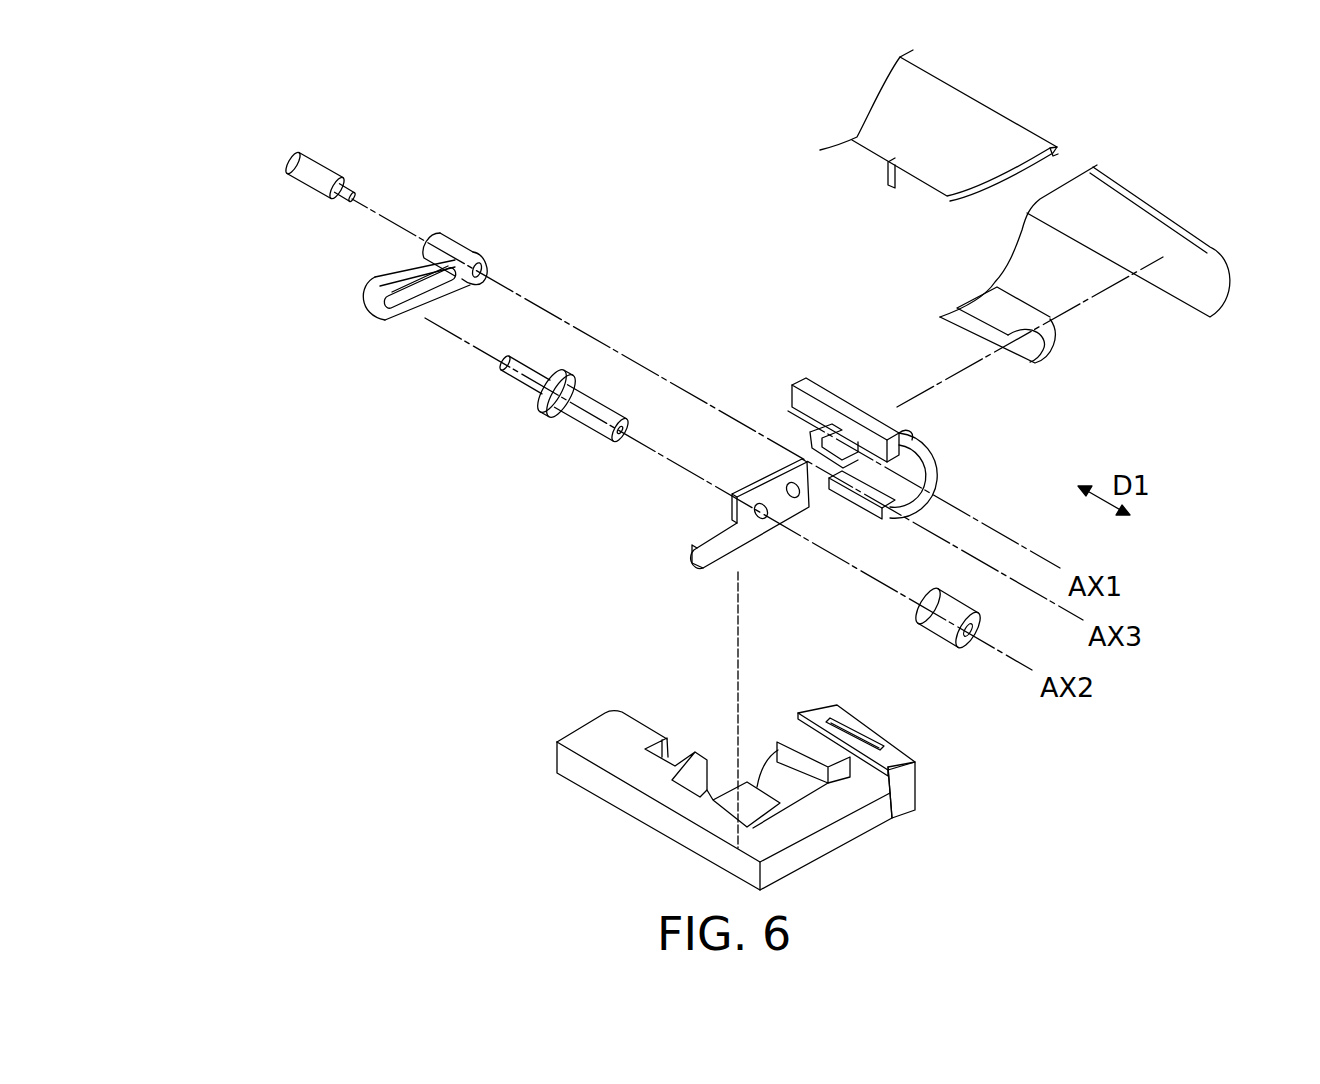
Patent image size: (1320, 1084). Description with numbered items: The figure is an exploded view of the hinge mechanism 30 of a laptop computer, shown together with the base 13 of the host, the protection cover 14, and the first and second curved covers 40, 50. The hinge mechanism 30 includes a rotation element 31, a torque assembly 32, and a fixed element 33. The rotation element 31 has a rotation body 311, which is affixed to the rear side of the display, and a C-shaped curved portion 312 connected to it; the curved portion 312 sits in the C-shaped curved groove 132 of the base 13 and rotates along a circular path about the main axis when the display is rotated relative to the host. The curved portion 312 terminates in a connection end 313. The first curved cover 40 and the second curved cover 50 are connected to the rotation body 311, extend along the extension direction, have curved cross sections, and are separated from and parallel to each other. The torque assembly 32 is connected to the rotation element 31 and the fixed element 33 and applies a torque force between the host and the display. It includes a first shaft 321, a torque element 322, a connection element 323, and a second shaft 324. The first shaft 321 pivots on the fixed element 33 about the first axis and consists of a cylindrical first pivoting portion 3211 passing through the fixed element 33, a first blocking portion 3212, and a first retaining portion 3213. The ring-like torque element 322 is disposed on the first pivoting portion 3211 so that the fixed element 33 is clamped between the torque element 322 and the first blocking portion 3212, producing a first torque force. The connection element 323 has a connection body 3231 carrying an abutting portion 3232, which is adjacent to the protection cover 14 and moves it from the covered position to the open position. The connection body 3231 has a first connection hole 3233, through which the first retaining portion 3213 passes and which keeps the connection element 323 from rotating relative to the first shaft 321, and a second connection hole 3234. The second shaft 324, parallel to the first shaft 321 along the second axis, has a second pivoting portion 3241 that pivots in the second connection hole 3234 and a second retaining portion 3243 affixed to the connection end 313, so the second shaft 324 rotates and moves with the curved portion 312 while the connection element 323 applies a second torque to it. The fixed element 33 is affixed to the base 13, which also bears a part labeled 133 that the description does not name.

The base 13 is at (777, 755).
The curved groove 132 is at (882, 746).
The top plate of base 133 is at (820, 712).
The protection cover 14 is at (993, 132).
The hinge mechanism 30 is at (193, 468).
The rotation element 31 is at (917, 448).
The rotation body 311 is at (828, 382).
The curved portion 312 is at (925, 423).
The connection end 313 is at (865, 515).
The torque assembly 32 is at (265, 128).
The first shaft 321 is at (489, 431).
The first pivoting portion 3211 is at (585, 432).
The first blocking portion 3212 is at (560, 405).
The first retaining portion 3213 is at (530, 383).
The torque element 322 is at (920, 655).
The connection element 323 is at (396, 274).
The connection body 3231 is at (383, 277).
The abutting portion 3232 is at (438, 232).
The first connection hole 3233 is at (400, 325).
The second connection hole 3234 is at (483, 262).
The second shaft 324 is at (228, 220).
The second pivoting portion 3241 is at (300, 178).
The second retaining portion 3243 is at (338, 196).
The fixed element 33 is at (708, 585).
The first curved cover 40 is at (1122, 274).
The second curved cover 50 is at (1045, 340).